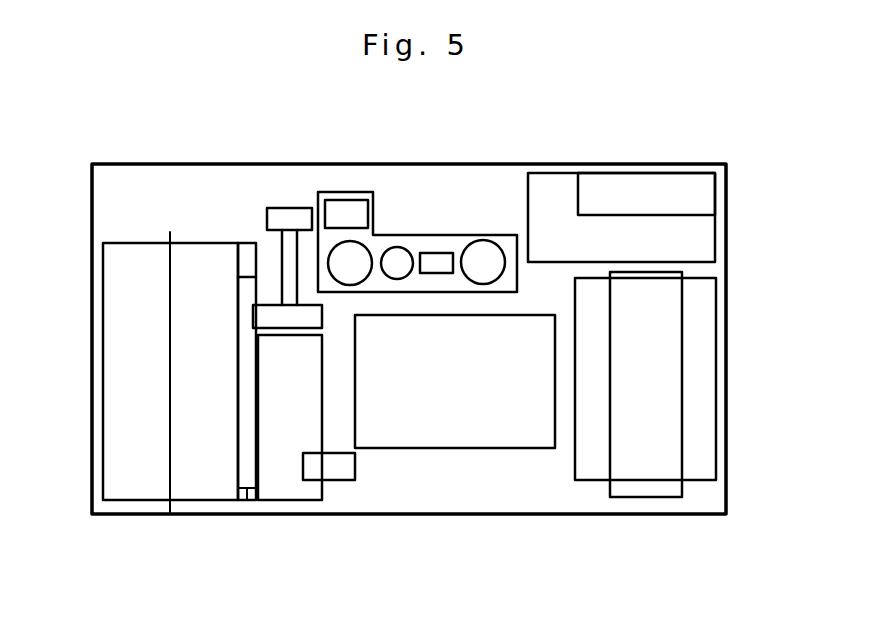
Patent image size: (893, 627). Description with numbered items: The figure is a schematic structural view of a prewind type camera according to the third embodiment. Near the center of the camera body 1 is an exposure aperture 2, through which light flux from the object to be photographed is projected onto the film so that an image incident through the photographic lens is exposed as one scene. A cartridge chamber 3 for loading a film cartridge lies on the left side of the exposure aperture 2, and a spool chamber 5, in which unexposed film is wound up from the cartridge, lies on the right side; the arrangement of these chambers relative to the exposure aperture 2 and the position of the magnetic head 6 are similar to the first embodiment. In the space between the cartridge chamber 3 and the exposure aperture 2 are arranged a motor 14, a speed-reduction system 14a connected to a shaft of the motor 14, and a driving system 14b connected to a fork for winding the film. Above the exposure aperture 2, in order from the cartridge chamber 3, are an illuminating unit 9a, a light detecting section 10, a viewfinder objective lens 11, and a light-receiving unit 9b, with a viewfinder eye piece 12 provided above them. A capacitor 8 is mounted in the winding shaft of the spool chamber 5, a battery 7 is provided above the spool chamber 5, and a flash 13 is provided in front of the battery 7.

The camera body 1 is at (686, 162).
The exposure aperture 2 is at (507, 441).
The cartridge chamber 3 is at (112, 263).
The spool chamber 5 is at (710, 330).
The magnetic head 6 is at (340, 476).
The battery 7 is at (557, 183).
The capacitor 8 is at (677, 390).
The illuminating unit 9a is at (365, 257).
The light-receiving unit 9b is at (481, 246).
The light detecting section 10 is at (400, 251).
The viewfinder objective lens 11 is at (435, 255).
The viewfinder eye piece 12 is at (345, 213).
The flash 13 is at (708, 197).
The motor 14 is at (278, 498).
The speed-reduction system 14a is at (273, 310).
The driving system 14b is at (286, 212).